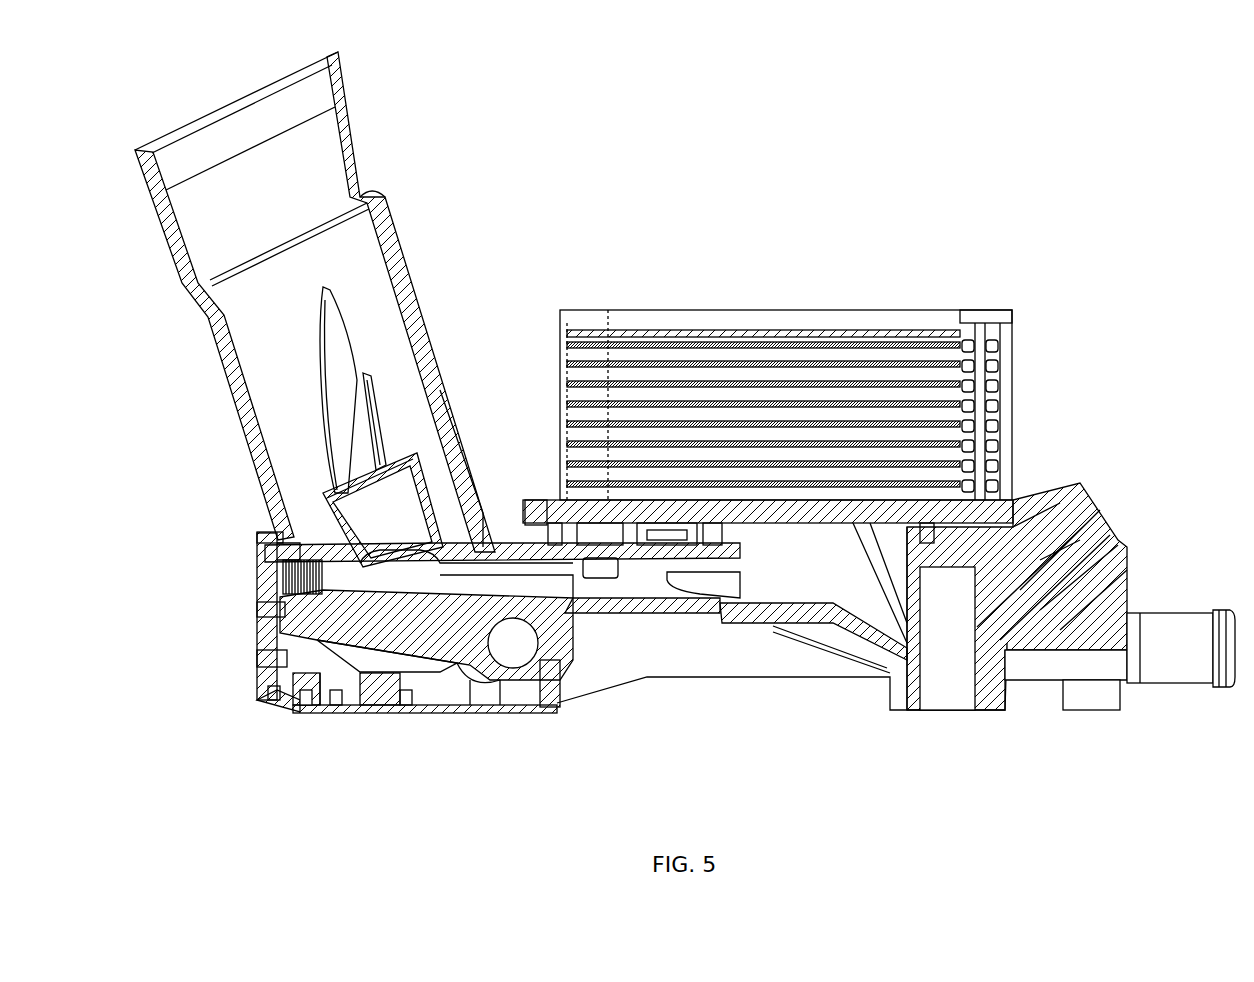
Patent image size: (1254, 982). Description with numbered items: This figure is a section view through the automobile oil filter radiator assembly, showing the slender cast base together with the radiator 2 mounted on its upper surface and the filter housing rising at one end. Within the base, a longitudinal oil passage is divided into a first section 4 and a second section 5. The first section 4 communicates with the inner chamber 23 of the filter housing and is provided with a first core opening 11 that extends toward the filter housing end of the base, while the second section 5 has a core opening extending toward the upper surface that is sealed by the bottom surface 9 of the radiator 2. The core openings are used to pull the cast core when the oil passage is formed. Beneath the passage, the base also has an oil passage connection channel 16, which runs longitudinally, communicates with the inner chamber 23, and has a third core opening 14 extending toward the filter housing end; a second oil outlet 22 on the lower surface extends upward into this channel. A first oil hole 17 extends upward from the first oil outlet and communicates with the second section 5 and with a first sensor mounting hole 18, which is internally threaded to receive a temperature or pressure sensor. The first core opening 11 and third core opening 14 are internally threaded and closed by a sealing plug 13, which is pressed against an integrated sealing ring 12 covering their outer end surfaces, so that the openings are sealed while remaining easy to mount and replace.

The radiator 2 is at (792, 355).
The first section 4 is at (557, 587).
The second section 5 is at (768, 573).
The bottom surface 9 is at (840, 523).
The first core opening 11 is at (265, 540).
The integrated sealing ring 12 is at (270, 693).
The sealing plug 13 is at (260, 690).
The third core opening 14 is at (320, 710).
The oil passage connection channel 16 is at (398, 658).
The first oil hole 17 is at (942, 658).
The first sensor mounting hole 18 is at (1060, 503).
The second oil outlet 22 is at (353, 703).
The inner chamber 23 is at (307, 503).